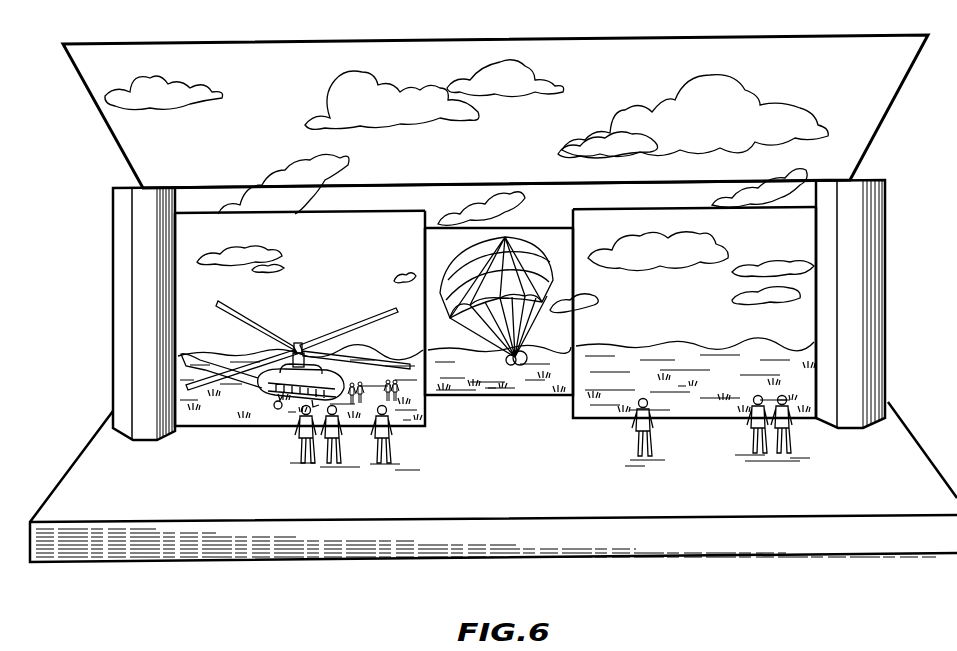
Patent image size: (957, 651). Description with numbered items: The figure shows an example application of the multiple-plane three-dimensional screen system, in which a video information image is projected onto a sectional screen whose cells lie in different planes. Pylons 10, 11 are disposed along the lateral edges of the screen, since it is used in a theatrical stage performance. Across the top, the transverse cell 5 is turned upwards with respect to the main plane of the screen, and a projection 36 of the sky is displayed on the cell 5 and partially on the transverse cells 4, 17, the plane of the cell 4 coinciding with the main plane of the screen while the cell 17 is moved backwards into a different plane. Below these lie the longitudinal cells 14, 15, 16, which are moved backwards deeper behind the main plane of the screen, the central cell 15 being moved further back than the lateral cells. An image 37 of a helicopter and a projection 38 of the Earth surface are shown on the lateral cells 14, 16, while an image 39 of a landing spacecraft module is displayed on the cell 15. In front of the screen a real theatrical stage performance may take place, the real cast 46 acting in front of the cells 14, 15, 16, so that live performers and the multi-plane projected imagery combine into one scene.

The transverse cell 4 is at (658, 196).
The transverse cell 5 is at (872, 116).
The pylon 10 is at (140, 323).
The pylon 11 is at (857, 333).
The longitudinal cell 14 is at (266, 424).
The longitudinal cell 15 is at (542, 397).
The longitudinal cell 16 is at (728, 420).
The transverse cell 17 is at (547, 220).
The projection of the sky 36 is at (517, 73).
The image of a helicopter 37 is at (298, 342).
The projection of the Earth surface 38 is at (232, 398).
The image of a landing spacecraft module 39 is at (497, 350).
The real cast 46 is at (370, 450).